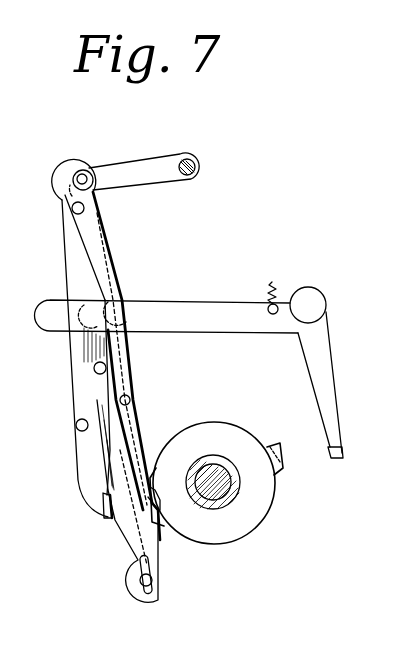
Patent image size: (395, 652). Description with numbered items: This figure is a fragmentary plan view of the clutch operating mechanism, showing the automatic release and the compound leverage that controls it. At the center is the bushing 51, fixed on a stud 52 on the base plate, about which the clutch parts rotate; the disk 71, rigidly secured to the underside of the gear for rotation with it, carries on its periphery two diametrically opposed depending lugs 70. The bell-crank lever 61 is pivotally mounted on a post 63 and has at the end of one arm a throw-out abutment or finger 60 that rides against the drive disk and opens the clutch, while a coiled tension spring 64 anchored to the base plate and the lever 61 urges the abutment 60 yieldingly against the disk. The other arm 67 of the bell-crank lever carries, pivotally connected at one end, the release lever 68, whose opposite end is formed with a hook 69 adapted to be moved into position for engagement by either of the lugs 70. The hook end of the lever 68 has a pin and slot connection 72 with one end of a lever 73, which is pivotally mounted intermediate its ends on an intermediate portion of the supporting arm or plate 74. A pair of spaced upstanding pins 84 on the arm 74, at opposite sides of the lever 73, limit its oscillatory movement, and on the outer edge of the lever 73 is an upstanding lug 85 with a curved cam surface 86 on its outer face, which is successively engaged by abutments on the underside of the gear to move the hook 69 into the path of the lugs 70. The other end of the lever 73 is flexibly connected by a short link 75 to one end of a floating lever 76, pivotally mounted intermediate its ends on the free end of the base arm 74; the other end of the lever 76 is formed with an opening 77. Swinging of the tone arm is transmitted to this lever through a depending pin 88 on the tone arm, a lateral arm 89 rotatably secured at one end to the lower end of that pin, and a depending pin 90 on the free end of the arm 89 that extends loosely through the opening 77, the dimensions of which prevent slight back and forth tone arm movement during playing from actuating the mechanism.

The bushing 51 is at (226, 508).
The stud 52 is at (210, 497).
The throw-out abutment or finger 60 is at (331, 453).
The bell-crank lever 61 is at (327, 330).
The post 63 is at (313, 297).
The coiled tension spring 64 is at (281, 284).
The arm of the bell-crank lever 67 is at (164, 310).
The lever 68 is at (118, 430).
The hook 69 is at (160, 527).
The depending lugs 70 is at (154, 522).
The disk 71 is at (258, 507).
The pin and slot connection 72 is at (143, 583).
The lever 73 is at (130, 542).
The supporting arm or plate 74 is at (73, 400).
The short link 75 is at (98, 300).
The floating lever 76 is at (94, 248).
The opening 77 is at (74, 162).
The upstanding pins 84 is at (77, 427).
The upstanding lug 85 is at (93, 490).
The curved cam surface 86 is at (104, 503).
The depending pin 88 is at (193, 162).
The lateral arm 89 is at (150, 160).
The depending pin 90 is at (84, 175).